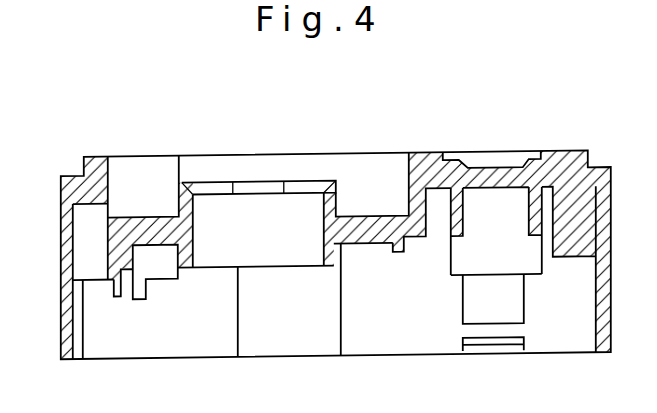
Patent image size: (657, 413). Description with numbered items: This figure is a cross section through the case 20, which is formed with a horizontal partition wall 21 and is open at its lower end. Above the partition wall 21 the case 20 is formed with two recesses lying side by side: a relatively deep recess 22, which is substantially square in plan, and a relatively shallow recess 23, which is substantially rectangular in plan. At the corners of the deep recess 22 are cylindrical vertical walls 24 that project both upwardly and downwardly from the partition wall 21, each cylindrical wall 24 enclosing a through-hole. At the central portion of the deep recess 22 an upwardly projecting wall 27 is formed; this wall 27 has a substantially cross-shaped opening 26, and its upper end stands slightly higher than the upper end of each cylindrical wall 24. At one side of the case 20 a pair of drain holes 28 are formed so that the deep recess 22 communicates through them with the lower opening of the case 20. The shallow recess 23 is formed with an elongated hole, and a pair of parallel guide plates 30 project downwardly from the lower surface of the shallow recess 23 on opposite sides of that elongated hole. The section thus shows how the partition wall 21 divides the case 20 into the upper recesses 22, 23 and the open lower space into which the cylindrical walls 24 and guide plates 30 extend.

The case 20 is at (590, 159).
The partition wall 21 is at (368, 231).
The deep recess 22 is at (127, 181).
The shallow recess 23 is at (493, 171).
The cylindrical vertical wall 24 is at (162, 271).
The cross-shaped opening 26 is at (298, 190).
The upwardly projecting wall 27 is at (177, 200).
The drain hole 28 is at (82, 232).
The guide plate 30 is at (468, 203).